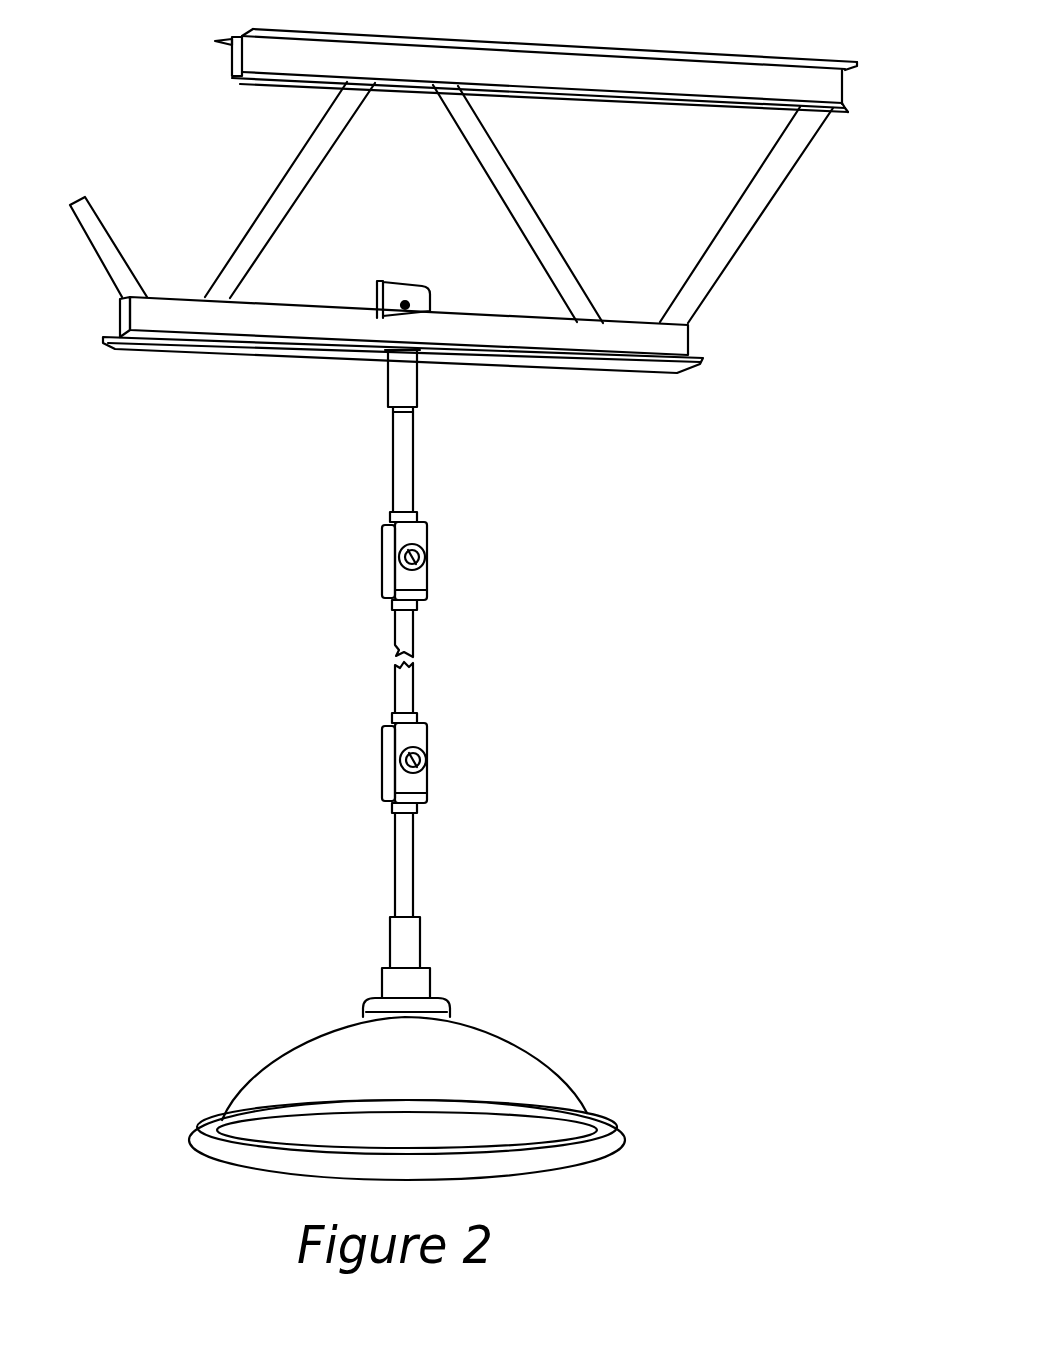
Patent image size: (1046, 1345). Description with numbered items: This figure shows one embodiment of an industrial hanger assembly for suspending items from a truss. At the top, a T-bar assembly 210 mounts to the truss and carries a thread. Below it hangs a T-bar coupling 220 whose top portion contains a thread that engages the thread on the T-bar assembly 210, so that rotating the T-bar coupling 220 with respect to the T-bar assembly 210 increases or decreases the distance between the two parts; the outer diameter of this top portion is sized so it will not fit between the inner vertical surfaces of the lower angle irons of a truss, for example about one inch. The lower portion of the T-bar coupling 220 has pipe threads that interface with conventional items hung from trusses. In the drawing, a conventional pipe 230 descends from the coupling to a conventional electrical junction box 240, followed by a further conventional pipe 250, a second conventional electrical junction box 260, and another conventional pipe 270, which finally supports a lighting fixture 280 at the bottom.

The T-bar assembly 210 is at (417, 281).
The T-bar coupling 220 is at (383, 383).
The conventional pipe 230 is at (413, 460).
The conventional electrical junction box 240 is at (382, 562).
The conventional pipe 250 is at (417, 685).
The conventional electrical junction box 260 is at (382, 765).
The conventional pipe 270 is at (417, 857).
The lighting fixture 280 is at (332, 1027).